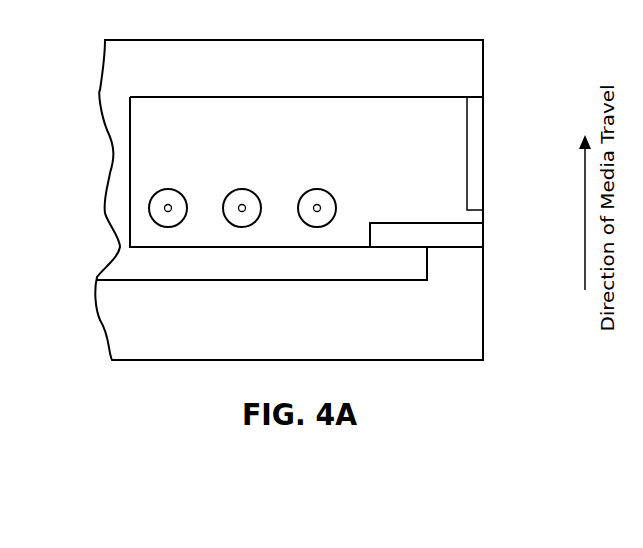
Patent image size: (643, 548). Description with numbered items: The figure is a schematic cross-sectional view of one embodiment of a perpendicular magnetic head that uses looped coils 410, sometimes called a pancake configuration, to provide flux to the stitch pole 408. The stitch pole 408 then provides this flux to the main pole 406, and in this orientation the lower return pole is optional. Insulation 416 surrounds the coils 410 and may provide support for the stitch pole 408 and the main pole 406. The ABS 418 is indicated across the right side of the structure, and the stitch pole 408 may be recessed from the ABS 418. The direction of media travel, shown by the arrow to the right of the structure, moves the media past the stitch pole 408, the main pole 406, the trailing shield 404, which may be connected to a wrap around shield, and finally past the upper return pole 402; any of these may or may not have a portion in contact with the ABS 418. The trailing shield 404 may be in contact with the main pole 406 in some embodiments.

The upper return pole 402 is at (385, 77).
The trailing shield 404 is at (484, 137).
The main pole 406 is at (484, 230).
The stitch pole 408 is at (325, 273).
The looped coils 410 is at (166, 190).
The insulation 416 is at (427, 177).
The ABS 418 is at (489, 59).